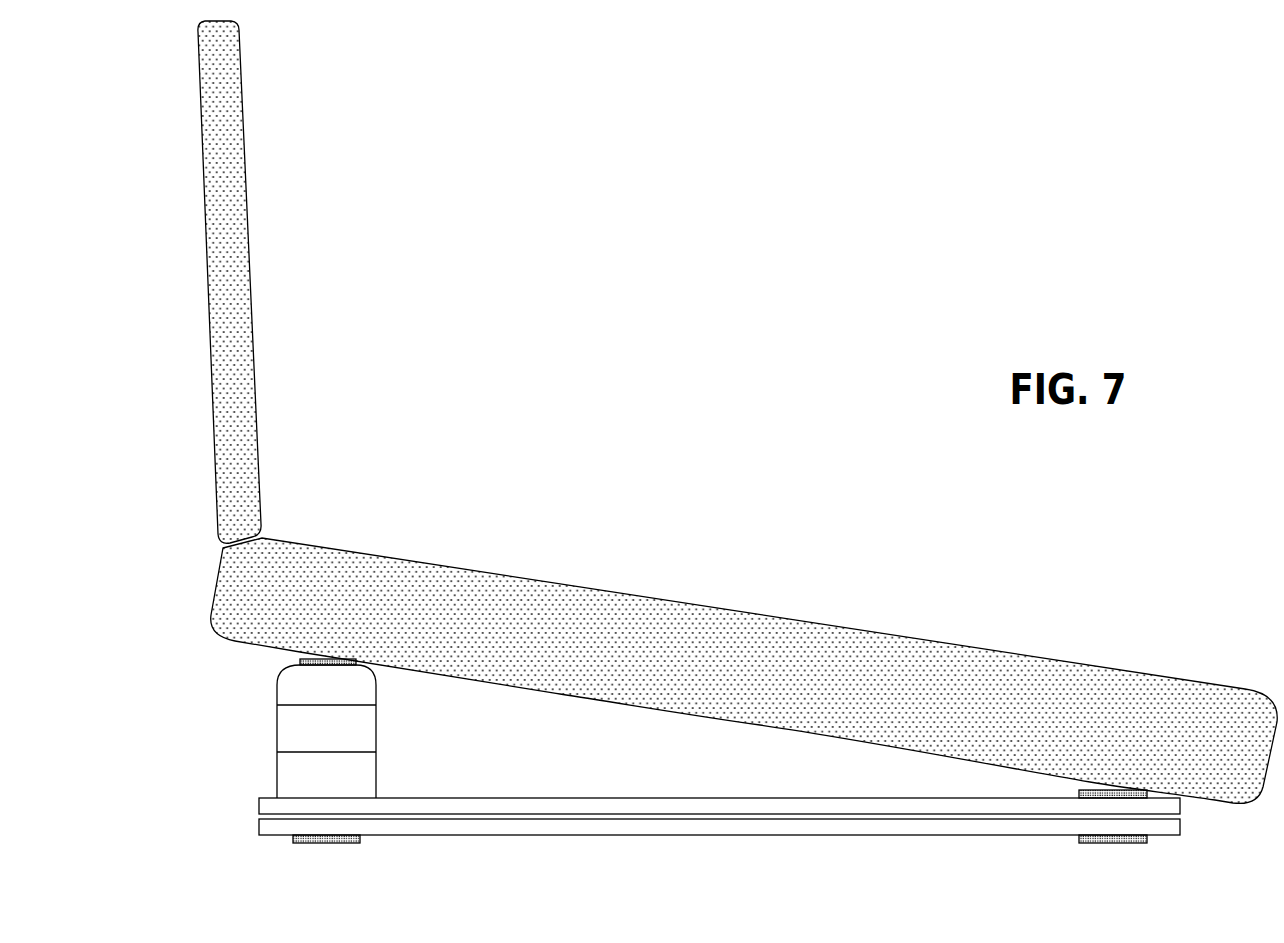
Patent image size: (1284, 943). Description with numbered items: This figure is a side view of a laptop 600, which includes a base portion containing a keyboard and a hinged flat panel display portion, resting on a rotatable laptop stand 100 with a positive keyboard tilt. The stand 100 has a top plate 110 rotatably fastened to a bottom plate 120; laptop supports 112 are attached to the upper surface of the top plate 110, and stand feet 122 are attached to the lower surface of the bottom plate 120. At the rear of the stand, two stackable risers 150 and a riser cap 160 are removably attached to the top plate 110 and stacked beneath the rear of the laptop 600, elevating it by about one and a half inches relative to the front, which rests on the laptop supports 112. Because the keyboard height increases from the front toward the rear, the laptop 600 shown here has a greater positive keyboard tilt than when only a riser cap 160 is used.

The rotatable laptop stand 100 is at (719, 788).
The top plate 110 is at (448, 805).
The laptop supports 112 is at (1077, 795).
The bottom plate 120 is at (723, 831).
The stand feet 122 is at (1155, 838).
The stackable riser 150 is at (298, 725).
The riser cap 160 is at (298, 677).
The laptop 600 is at (990, 677).